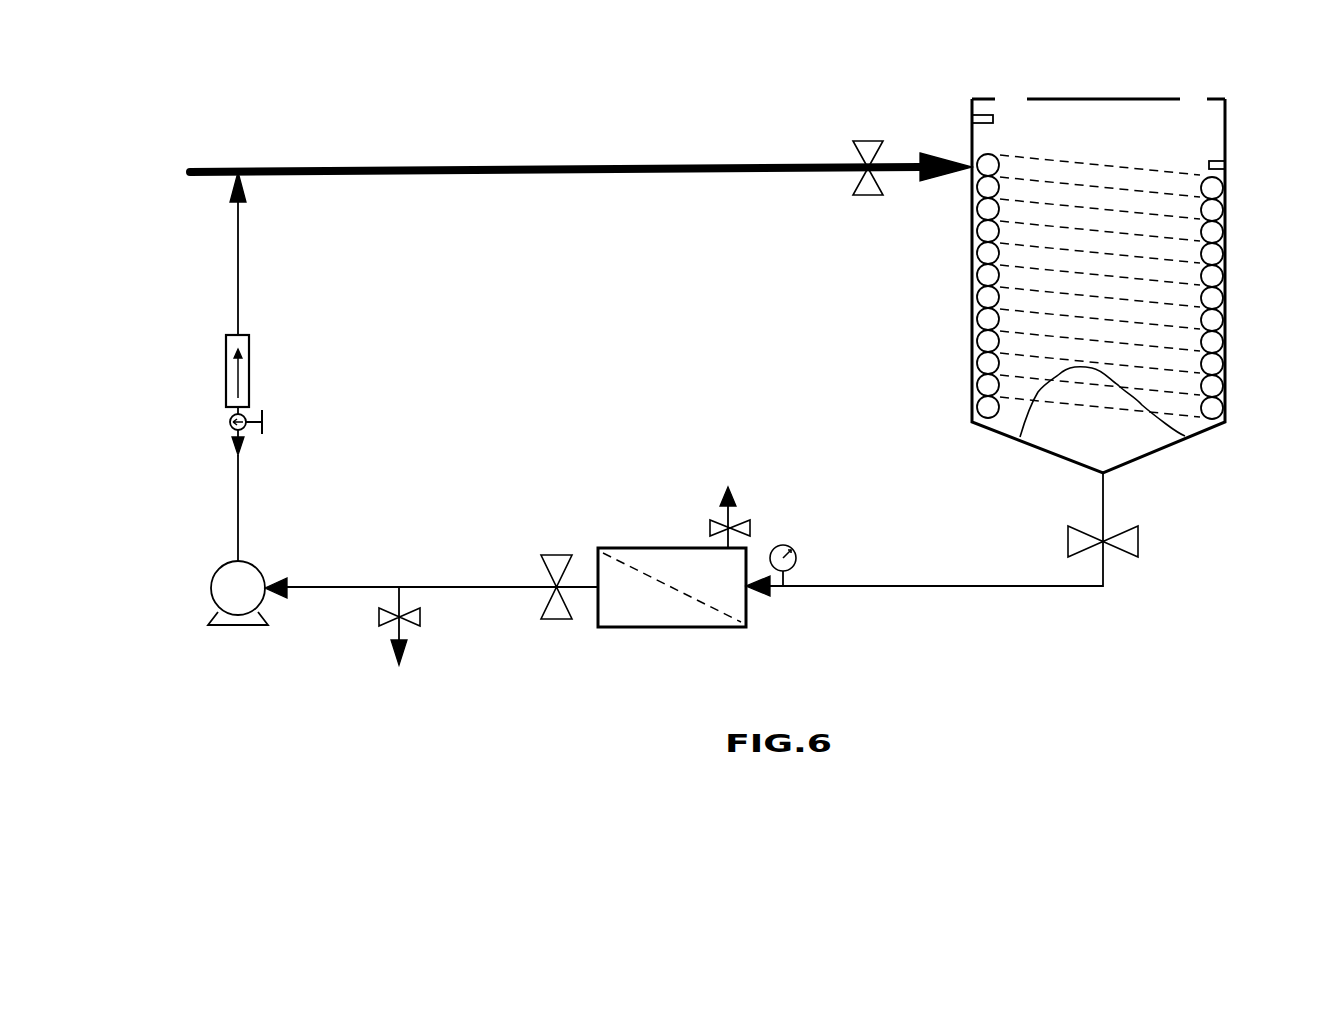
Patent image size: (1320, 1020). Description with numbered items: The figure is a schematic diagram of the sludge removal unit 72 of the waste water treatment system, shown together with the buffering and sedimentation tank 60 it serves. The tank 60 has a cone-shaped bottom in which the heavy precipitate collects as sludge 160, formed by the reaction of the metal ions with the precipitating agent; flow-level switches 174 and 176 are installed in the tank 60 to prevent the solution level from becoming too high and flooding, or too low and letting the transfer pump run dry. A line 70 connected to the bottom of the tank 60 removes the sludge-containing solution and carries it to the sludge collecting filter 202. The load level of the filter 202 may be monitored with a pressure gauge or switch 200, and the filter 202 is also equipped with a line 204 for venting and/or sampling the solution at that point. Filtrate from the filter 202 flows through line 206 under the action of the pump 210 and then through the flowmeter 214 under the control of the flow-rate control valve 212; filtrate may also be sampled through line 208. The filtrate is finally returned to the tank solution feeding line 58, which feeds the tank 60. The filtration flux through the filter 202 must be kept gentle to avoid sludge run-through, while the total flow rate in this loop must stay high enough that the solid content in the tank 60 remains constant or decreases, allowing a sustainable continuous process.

The tank solution feeding line 58 is at (726, 172).
The buffering and sedimentation tank 60 is at (972, 325).
The line 70 is at (1103, 512).
The sludge removal unit 72 is at (724, 89).
The sludge 160 is at (1048, 438).
The flow-level switch 174 is at (993, 119).
The flow-level switch 176 is at (1215, 160).
The pressure gauge or switch 200 is at (797, 562).
The sludge collecting filter 202 is at (720, 627).
The line 204 is at (735, 520).
The line 206 is at (495, 590).
The line 208 is at (403, 630).
The pump 210 is at (255, 566).
The flow-rate control valve 212 is at (262, 427).
The flowmeter 214 is at (249, 362).